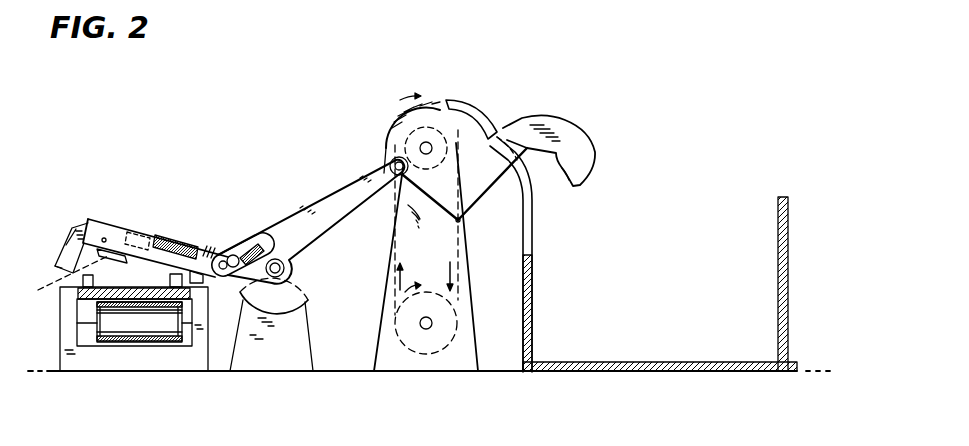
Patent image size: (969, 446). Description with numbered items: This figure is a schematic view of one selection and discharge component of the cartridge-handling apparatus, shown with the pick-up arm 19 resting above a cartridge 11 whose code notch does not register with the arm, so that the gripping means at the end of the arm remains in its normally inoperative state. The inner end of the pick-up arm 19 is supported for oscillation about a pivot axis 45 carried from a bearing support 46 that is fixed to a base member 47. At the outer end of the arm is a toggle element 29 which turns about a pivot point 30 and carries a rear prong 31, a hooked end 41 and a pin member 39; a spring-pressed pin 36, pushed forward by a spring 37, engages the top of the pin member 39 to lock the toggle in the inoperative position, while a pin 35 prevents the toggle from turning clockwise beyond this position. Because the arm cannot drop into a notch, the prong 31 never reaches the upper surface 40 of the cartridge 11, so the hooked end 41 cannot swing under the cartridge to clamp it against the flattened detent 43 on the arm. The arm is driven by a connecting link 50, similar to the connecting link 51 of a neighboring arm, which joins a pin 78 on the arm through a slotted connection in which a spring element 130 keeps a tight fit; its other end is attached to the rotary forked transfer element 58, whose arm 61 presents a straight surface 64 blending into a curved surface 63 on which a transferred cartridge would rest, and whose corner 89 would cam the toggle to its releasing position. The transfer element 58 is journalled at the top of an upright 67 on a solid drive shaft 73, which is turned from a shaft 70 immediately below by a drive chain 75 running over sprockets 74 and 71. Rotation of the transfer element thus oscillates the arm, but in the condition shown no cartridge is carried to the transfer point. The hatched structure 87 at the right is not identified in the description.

The cartridge 11 is at (82, 296).
The pick-up arm 19 is at (148, 230).
The toggle element 29 is at (84, 226).
The pivot point 30 is at (105, 237).
The rear prong 31 is at (136, 279).
The pin 35 is at (40, 292).
The spring-pressed pin 36 is at (170, 241).
The spring 37 is at (186, 246).
The pin member 39 is at (147, 232).
The upper surface 40 is at (152, 304).
The hooked end 41 is at (57, 269).
The flattened detent 43 is at (205, 281).
The pivot axis 45 is at (290, 267).
The bearing support 46 is at (303, 323).
The base member 47 is at (339, 372).
The connecting link 50 is at (328, 197).
The connecting link 51 is at (392, 167).
The forked transfer element 58 is at (394, 123).
The arm 61 is at (533, 121).
The curved surface 63 is at (567, 172).
The straight surface 64 is at (493, 196).
The upright 67 is at (388, 292).
The shaft 70 is at (432, 323).
The sprocket 71 is at (398, 337).
The drive shaft 73 is at (427, 146).
The sprocket 74 is at (478, 111).
The drive chain 75 is at (465, 292).
The pin 78 is at (229, 253).
The receptacle wall 87 is at (533, 307).
The corner 89 is at (458, 222).
The spring element 130 is at (247, 247).